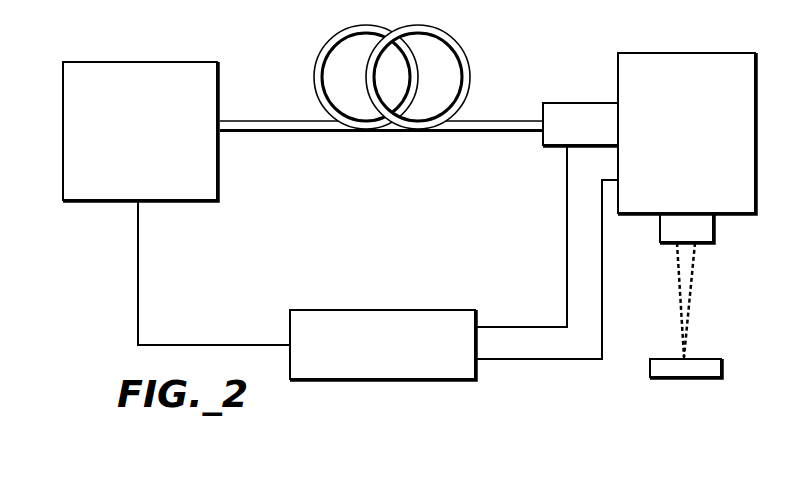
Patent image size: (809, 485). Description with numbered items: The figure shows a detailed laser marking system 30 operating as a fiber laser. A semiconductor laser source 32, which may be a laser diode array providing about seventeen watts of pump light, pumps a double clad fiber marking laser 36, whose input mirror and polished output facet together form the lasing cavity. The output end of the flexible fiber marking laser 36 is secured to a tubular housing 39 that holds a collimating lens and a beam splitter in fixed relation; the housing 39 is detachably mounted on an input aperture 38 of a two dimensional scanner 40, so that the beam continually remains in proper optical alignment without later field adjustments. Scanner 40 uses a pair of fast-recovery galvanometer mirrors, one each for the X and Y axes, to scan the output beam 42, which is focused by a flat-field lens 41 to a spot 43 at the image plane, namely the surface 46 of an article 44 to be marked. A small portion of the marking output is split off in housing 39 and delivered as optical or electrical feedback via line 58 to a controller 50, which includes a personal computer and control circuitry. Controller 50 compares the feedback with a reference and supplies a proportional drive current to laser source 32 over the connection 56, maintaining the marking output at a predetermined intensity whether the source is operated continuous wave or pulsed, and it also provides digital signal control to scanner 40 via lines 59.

The laser marking system 30 is at (292, 47).
The semiconductor laser source 32 is at (186, 62).
The double clad fiber marking laser 36 is at (453, 40).
The input aperture 38 is at (618, 122).
The housing 39 is at (553, 103).
The scanner 40 is at (670, 53).
The lens 41 is at (713, 219).
The output beam 42 is at (690, 319).
The spot 43 is at (682, 356).
The article 44 is at (720, 359).
The surface 46 is at (658, 359).
The controller 50 is at (372, 310).
The control line to pump source 56 is at (138, 290).
The line 58 is at (567, 287).
The lines 59 is at (602, 287).